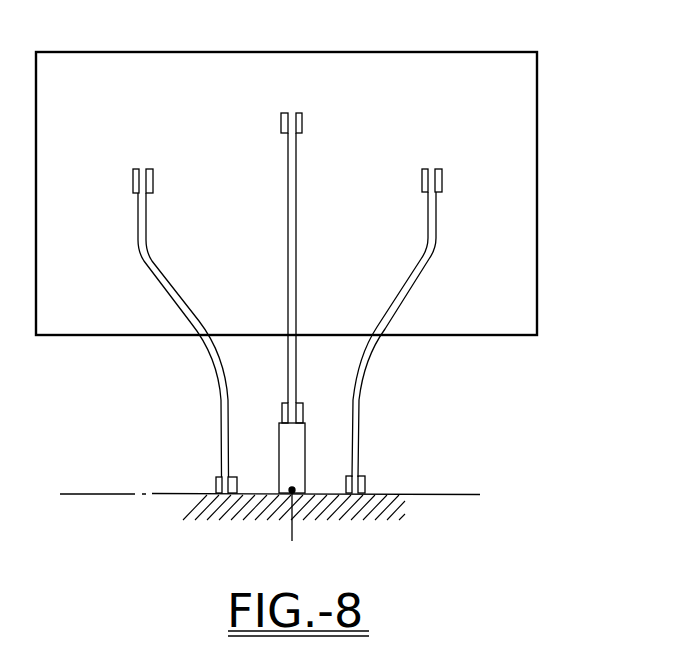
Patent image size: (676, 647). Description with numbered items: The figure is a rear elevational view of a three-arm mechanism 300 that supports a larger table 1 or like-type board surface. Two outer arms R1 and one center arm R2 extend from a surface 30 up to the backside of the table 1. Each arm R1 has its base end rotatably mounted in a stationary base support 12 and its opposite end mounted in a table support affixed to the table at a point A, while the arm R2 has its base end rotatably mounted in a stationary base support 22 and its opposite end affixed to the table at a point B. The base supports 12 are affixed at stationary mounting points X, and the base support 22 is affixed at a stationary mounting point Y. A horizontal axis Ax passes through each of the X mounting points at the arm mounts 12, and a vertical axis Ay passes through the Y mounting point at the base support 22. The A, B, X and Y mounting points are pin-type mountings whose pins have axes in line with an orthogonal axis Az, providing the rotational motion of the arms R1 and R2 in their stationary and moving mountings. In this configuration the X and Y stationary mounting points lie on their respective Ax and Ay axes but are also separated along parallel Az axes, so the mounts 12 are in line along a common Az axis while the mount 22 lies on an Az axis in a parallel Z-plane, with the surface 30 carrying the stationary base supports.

The table 1 is at (187, 52).
The three-arm mechanism 300 is at (368, 89).
The table mounting point A is at (154, 183).
The table mounting point B is at (297, 122).
The arm R1 is at (215, 389).
The arm R2 is at (296, 296).
The base support 22 is at (280, 413).
The stationary pivot point Y is at (303, 411).
The base support 12 is at (216, 481).
The stationary pivot point X is at (238, 490).
The surface 30 is at (332, 502).
The Az axis AZ is at (83, 497).
The Ax axis AX is at (292, 490).
The Ay axis AY is at (298, 531).